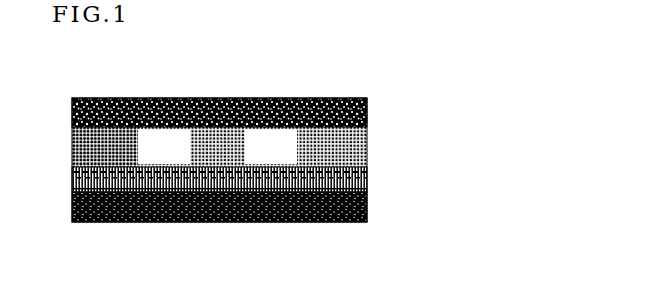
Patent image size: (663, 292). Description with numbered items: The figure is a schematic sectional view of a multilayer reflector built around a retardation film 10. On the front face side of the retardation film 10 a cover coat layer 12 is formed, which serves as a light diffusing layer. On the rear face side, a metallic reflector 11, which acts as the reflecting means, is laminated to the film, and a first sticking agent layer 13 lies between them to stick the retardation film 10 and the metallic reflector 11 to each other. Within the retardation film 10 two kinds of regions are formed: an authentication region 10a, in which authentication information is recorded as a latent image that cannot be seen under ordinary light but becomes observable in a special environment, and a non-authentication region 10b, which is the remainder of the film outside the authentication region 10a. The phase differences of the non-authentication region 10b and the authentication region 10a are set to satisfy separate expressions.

The cover coat layer 12 is at (367, 107).
The retardation film 10 is at (367, 132).
The authentication region 10a is at (265, 150).
The non-authentication region 10b is at (108, 147).
The first sticking agent layer 13 is at (367, 173).
The metallic reflector 11 is at (367, 200).